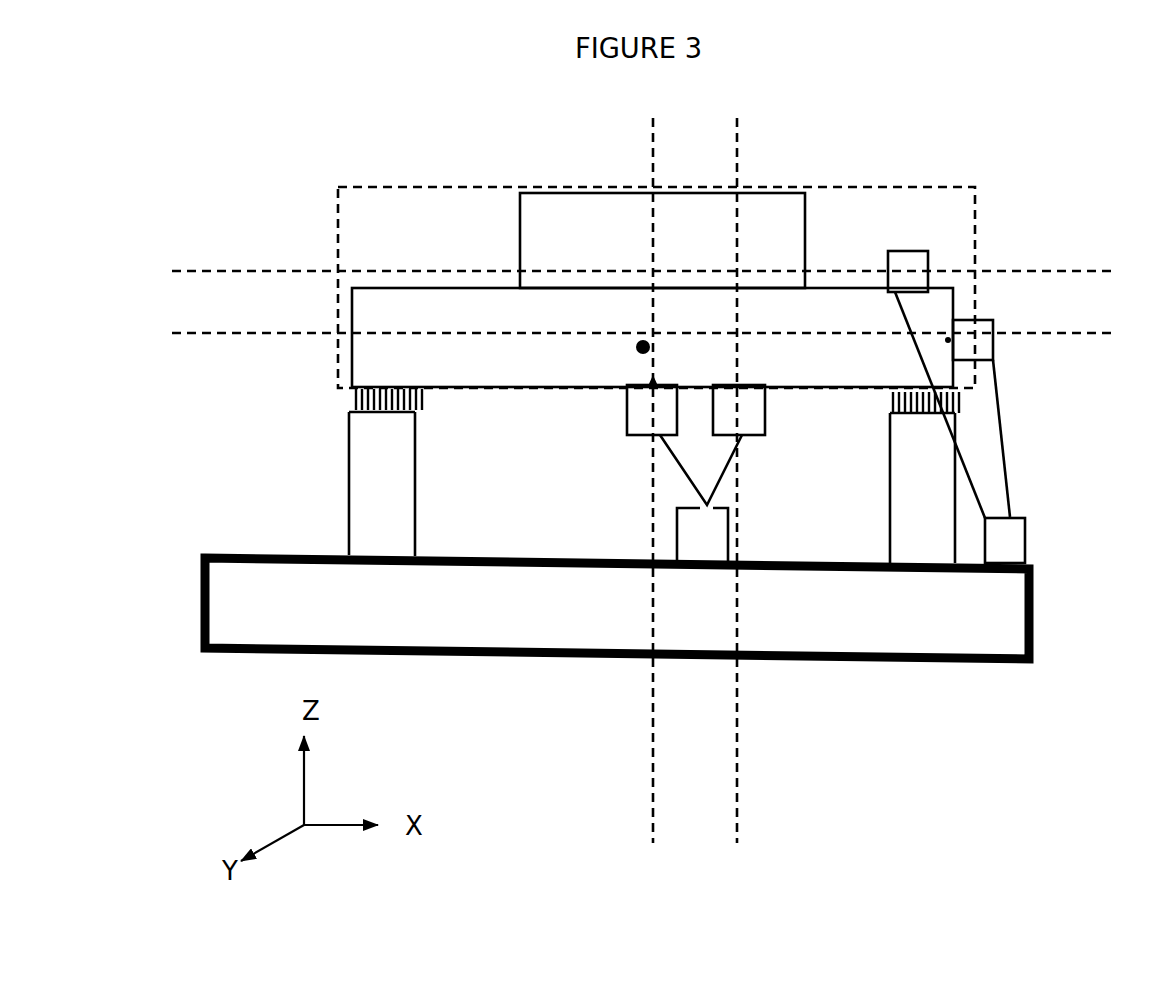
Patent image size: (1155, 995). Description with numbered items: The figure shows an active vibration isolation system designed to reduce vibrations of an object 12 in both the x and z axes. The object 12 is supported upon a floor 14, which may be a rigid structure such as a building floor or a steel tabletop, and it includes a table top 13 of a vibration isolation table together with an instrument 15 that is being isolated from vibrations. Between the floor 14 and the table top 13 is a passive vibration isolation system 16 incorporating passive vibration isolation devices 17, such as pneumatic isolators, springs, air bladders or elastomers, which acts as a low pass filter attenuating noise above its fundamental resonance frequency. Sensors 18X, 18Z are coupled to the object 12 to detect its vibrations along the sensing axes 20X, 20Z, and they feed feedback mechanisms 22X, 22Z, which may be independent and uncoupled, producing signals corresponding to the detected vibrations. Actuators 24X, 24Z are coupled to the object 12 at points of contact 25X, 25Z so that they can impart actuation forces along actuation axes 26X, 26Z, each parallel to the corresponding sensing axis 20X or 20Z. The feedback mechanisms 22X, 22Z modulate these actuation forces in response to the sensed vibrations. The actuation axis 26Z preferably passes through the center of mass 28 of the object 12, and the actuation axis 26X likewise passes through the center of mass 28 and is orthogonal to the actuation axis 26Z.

The object 12 is at (988, 272).
The table top 13 is at (946, 324).
The floor 14 is at (1009, 641).
The instrument 15 is at (798, 254).
The passive vibration isolation system 16 is at (345, 467).
The passive vibration isolation devices 17 is at (352, 397).
The sensor 18X is at (932, 248).
The sensor 18Z is at (770, 418).
The sensing axis 20X is at (617, 266).
The sensing axis 20Z is at (742, 498).
The feedback mechanism 22X is at (1014, 538).
The feedback mechanism 22Z is at (742, 525).
The actuator 24X is at (997, 351).
The actuator 24Z is at (624, 421).
The point of contact 25X is at (944, 342).
The point of contact 25Z is at (660, 379).
The actuation axis 26X is at (617, 331).
The actuation axis 26Z is at (653, 498).
The center of mass 28 is at (633, 348).